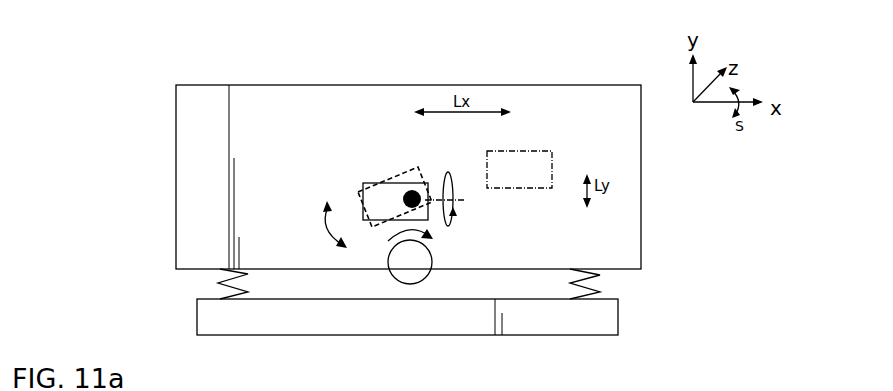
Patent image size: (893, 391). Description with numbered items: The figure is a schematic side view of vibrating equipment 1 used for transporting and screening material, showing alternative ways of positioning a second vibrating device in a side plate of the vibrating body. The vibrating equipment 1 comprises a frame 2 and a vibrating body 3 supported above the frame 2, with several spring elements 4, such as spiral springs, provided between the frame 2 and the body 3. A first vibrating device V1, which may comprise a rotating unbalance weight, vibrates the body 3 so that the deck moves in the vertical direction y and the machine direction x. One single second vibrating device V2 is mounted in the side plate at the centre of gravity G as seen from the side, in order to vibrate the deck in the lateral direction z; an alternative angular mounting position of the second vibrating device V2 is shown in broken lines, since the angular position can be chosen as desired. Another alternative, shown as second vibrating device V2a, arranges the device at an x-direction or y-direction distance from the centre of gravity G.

The vibrating equipment 1 is at (113, 50).
The frame 2 is at (353, 322).
The vibrating body 3 is at (263, 97).
The spring elements 4 is at (213, 282).
The second vibrating device V2 is at (370, 182).
The second vibrating device V2a is at (523, 151).
The centre of gravity G is at (413, 190).
The first vibrating device V1 is at (410, 262).